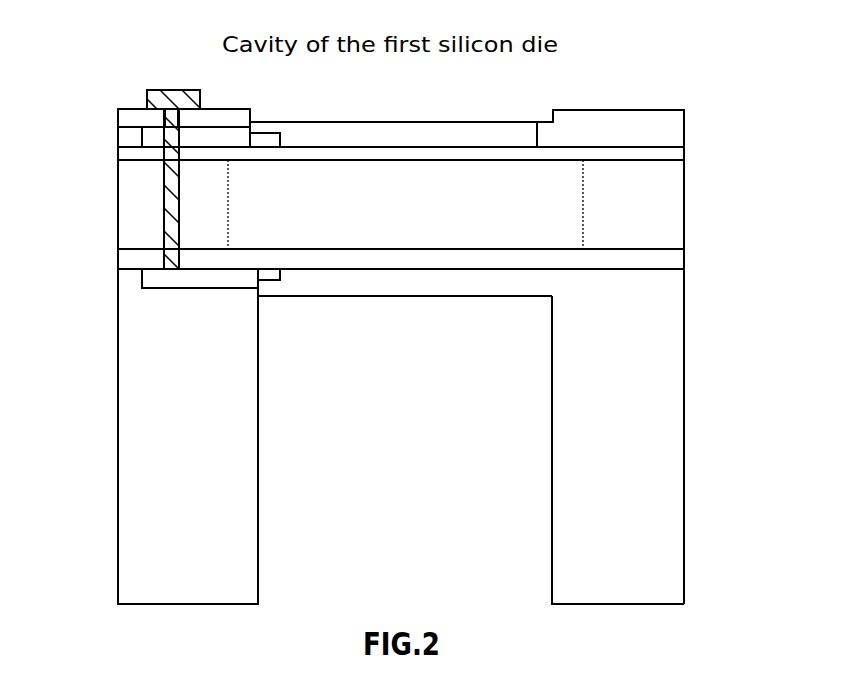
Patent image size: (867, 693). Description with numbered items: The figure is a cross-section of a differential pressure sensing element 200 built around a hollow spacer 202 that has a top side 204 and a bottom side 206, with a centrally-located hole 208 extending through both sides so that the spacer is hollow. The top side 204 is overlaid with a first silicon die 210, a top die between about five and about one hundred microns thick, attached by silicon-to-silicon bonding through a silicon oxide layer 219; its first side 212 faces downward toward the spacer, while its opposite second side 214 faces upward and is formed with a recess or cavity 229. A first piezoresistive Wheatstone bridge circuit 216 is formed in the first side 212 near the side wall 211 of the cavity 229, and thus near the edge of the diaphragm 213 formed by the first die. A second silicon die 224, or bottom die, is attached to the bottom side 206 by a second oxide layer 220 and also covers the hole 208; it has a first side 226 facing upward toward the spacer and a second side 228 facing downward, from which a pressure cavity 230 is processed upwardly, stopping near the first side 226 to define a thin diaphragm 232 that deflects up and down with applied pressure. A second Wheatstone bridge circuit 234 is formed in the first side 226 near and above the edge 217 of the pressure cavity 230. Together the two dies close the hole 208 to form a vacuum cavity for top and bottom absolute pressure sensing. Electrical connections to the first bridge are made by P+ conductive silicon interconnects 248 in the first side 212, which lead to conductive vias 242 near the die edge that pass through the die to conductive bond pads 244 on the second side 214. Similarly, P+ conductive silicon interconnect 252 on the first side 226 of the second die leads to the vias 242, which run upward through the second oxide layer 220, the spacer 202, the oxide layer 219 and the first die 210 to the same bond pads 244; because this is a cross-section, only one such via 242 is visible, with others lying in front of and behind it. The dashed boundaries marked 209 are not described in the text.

The differential pressure sensing element 200 is at (659, 32).
The spacer 202 is at (682, 232).
The top side 204 is at (665, 163).
The bottom side 206 is at (592, 249).
The hole 208 is at (418, 197).
The membrane boundary 209 is at (228, 203).
The first silicon die 210 is at (678, 128).
The side wall 211 is at (250, 117).
The first side 212 is at (537, 122).
The diaphragm 213 is at (465, 122).
The second side 214 is at (578, 110).
The first piezoresistive Wheatstone bridge circuit 216 is at (262, 133).
The edge 217 is at (258, 470).
The silicon oxide layer 219 is at (120, 154).
The second oxide layer 220 is at (131, 260).
The second silicon die 224 is at (684, 417).
The first side 226 is at (550, 269).
The second side 228 is at (558, 605).
The cavity 229 is at (405, 108).
The pressure cavity 230 is at (428, 450).
The diaphragm 232 is at (375, 296).
The second Wheatstone bridge circuit 234 is at (270, 281).
The conductive vias 242 is at (163, 190).
The conductive bond pads 244 is at (151, 90).
The P+ conductive silicon interconnects 248 is at (147, 115).
The P+ conductive silicon interconnect 252 is at (162, 290).